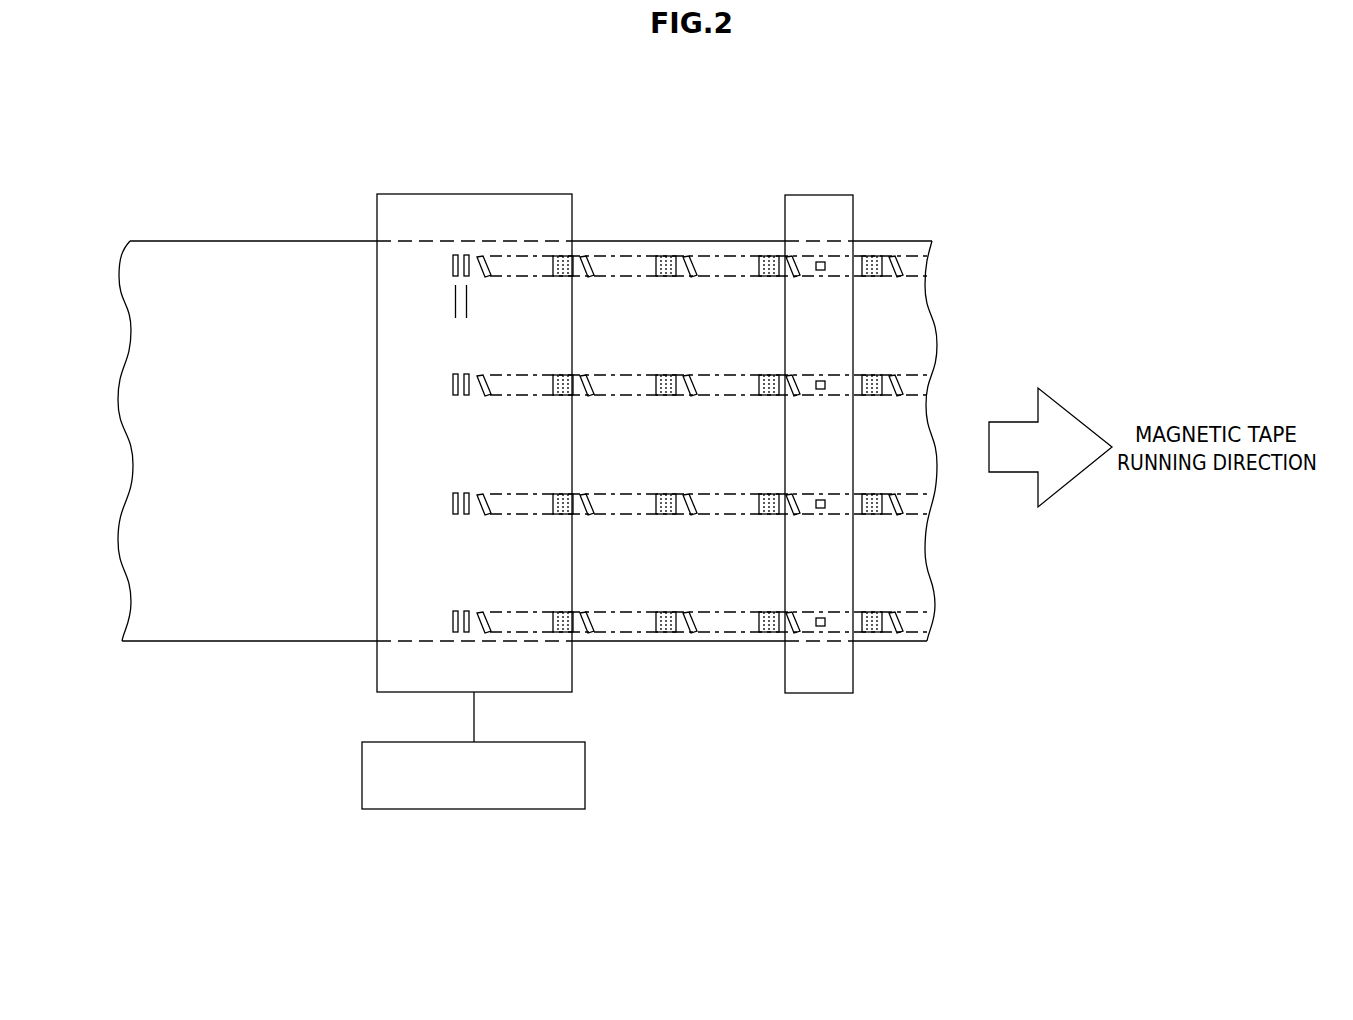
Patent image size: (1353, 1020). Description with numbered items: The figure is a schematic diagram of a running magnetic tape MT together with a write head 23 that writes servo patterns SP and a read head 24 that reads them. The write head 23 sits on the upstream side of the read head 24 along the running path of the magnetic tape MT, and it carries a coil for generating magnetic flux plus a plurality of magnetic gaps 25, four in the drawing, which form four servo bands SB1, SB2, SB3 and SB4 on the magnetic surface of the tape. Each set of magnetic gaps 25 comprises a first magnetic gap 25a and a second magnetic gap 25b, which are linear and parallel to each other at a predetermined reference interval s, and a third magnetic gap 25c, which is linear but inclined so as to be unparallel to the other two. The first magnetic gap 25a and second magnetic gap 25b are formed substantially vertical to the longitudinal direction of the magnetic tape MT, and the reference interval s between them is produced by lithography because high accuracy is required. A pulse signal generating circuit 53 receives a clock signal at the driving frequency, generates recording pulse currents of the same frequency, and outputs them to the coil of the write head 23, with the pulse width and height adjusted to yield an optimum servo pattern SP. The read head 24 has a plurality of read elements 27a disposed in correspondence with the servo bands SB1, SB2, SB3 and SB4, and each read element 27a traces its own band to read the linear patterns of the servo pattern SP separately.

The write head 23 is at (572, 668).
The read head 24 is at (832, 693).
The magnetic gaps 25 is at (728, 63).
The first magnetic gap 25a is at (455, 254).
The second magnetic gap 25b is at (466, 254).
The third magnetic gap 25c is at (482, 256).
The read element 27a is at (820, 262).
The pulse signal generating circuit 53 is at (585, 766).
The magnetic tape MT is at (203, 241).
The servo pattern SP is at (690, 263).
The reference interval S is at (422, 300).
The servo band SB1 is at (942, 267).
The servo band SB2 is at (942, 386).
The servo band SB3 is at (940, 505).
The servo band SB4 is at (940, 623).